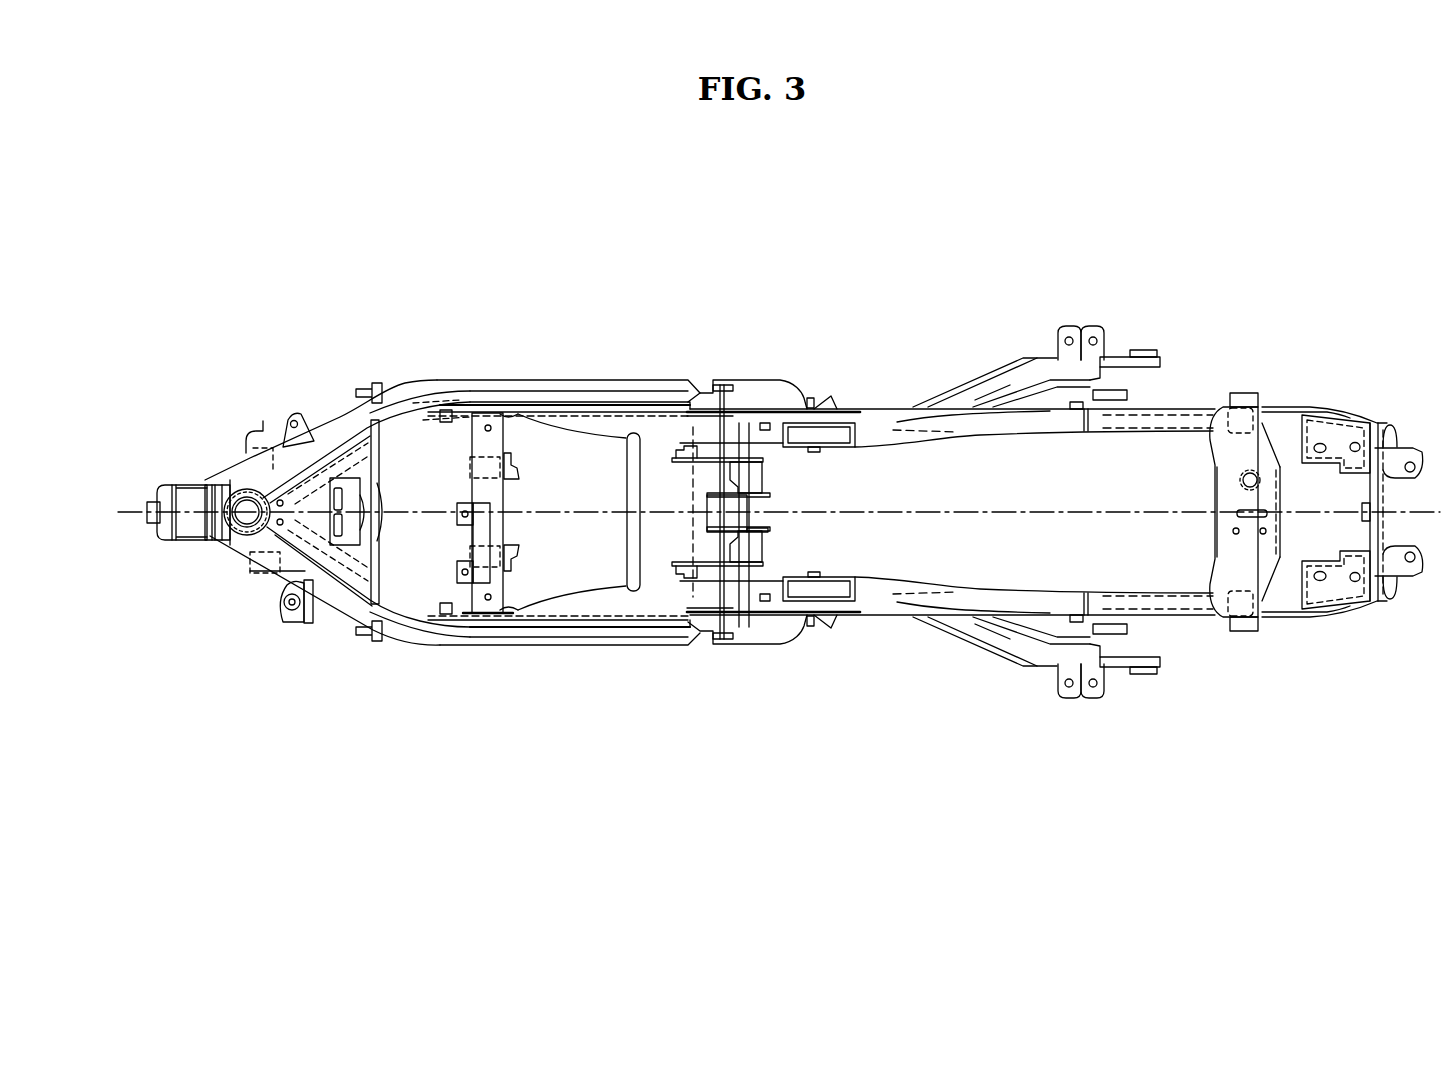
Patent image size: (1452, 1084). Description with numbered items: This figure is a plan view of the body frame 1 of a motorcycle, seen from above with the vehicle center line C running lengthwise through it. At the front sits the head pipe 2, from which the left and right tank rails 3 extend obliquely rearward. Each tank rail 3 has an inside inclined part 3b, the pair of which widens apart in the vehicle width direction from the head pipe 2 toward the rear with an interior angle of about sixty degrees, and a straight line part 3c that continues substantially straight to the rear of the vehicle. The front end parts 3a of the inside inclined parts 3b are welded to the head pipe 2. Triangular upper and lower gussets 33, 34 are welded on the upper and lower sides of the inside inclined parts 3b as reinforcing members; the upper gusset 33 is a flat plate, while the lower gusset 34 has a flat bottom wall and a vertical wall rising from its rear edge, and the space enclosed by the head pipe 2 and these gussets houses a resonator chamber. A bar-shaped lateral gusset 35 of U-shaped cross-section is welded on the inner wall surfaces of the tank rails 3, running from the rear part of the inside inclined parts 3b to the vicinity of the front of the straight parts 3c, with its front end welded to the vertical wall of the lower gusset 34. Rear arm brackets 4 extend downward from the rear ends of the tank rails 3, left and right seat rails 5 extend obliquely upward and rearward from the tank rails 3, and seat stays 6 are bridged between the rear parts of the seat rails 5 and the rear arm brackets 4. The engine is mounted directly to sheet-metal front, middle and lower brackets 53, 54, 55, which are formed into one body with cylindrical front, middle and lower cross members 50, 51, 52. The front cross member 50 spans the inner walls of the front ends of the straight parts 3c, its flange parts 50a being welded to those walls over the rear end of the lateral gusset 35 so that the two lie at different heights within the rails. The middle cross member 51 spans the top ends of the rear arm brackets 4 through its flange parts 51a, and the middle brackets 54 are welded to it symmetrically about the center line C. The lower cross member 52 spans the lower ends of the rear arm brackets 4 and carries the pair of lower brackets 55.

The body frame 1 is at (1120, 228).
The head pipe 2 is at (176, 481).
The tank rails 3 is at (405, 378).
The front end parts 3a is at (222, 470).
The inside inclined parts 3b is at (323, 417).
The straight line parts 3c is at (637, 379).
The upper gusset 33 is at (352, 427).
The lower gusset 34 is at (395, 526).
The lateral gusset 35 is at (430, 412).
The rear arm brackets 4 is at (788, 383).
The seat rails 5 is at (928, 446).
The seat stays 6 is at (848, 425).
The front cross member 50 is at (512, 423).
The flange parts 50a is at (452, 410).
The middle cross member 51 is at (688, 523).
The flange parts 51a is at (717, 394).
The lower cross member 52 is at (752, 600).
The front brackets 53 is at (515, 468).
The middle brackets 54 is at (673, 460).
The lower brackets 55 is at (740, 440).
The center line of the vehicle body C is at (1050, 513).